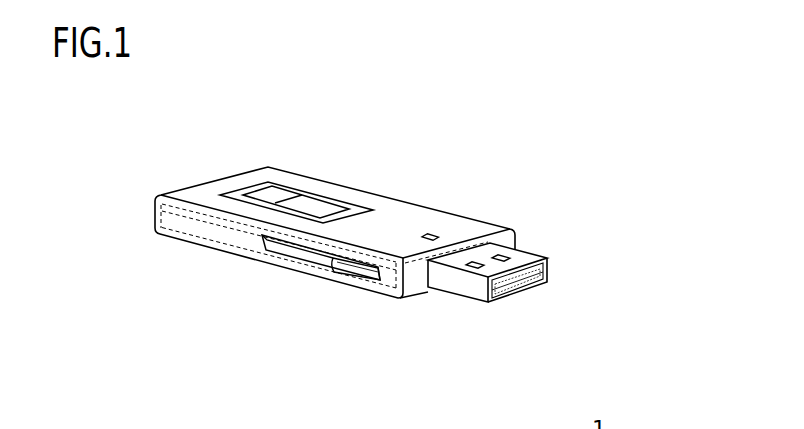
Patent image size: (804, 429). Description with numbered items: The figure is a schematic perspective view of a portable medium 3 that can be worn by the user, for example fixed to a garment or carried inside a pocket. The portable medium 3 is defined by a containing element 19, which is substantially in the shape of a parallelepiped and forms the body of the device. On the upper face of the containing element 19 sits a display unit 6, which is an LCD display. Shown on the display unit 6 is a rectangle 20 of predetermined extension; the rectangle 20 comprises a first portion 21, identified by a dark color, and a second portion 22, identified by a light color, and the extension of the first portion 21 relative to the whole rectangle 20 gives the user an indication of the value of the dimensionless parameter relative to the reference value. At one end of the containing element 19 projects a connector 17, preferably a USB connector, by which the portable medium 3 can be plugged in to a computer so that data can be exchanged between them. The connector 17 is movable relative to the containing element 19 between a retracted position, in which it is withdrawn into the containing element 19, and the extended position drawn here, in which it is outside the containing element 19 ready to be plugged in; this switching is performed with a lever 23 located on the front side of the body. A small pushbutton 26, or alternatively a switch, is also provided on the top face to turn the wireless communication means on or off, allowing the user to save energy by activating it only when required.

The portable medium 3 is at (467, 167).
The containing element 19 is at (205, 176).
The first portion 21 is at (270, 187).
The second portion 22 is at (313, 203).
The display unit 6 is at (342, 197).
The rectangle 20 is at (240, 203).
The pushbutton 26 is at (439, 234).
The lever 23 is at (361, 269).
The connector 17 is at (558, 267).